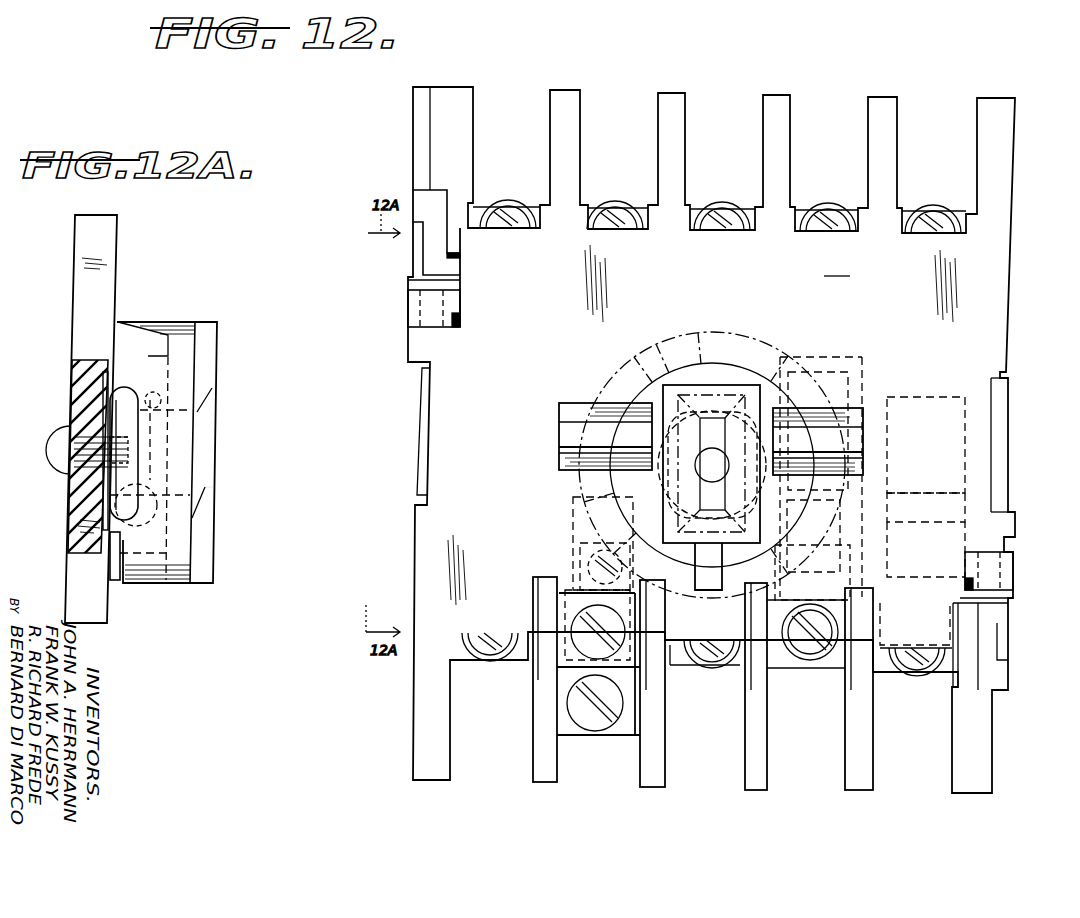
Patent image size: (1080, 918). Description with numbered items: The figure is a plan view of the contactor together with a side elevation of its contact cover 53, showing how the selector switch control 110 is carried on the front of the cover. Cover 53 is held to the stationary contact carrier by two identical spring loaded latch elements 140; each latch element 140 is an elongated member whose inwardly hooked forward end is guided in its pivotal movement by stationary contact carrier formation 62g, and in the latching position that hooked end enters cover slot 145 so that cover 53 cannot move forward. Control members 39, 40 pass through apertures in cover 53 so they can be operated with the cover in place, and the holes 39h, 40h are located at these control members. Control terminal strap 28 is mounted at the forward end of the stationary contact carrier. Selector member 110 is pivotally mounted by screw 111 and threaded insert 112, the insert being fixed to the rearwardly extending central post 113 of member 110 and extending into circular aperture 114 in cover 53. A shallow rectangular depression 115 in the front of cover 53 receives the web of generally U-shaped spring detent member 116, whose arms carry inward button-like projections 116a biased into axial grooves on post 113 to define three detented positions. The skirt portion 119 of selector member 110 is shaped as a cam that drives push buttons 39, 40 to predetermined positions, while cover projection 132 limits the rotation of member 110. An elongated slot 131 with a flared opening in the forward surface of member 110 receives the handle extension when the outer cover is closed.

In FIG. 12, the contact cover 53 is at (711, 440).
In FIG. 12A, the contact cover 53 is at (68, 232).
In FIG. 12, the selector switch control 110 is at (768, 334).
In FIG. 12A, the selector switch control 110 is at (231, 365).
In FIG. 12, the stop control 39 is at (559, 417).
In FIG. 12, the hole in contact block 39h is at (572, 403).
In FIG. 12, the control member 40 is at (867, 417).
In FIG. 12, the hole in contact block 40h is at (844, 408).
In FIG. 12, the cover projection 132 is at (693, 577).
In FIG. 12A, the cover projection 132 is at (118, 582).
In FIG. 12, the control terminal strap 28 is at (555, 676).
In FIG. 12, the stationary contact carrier formation 62g is at (432, 257).
In FIG. 12, the spring loaded latch element 140 is at (411, 310).
In FIG. 12, the cover slot 145 is at (448, 322).
In FIG. 12A, the threaded insert 112 is at (76, 416).
In FIG. 12A, the screw 111 is at (52, 452).
In FIG. 12A, the central post 113 is at (148, 398).
In FIG. 12A, the circular aperture 114 is at (72, 480).
In FIG. 12A, the shallow rectangular depression 115 is at (106, 375).
In FIG. 12A, the spring detent member 116 is at (120, 388).
In FIG. 12A, the button-like projections 116a is at (144, 494).
In FIG. 12A, the skirt portion 119 is at (160, 322).
In FIG. 12A, the elongated slot 131 is at (205, 490).